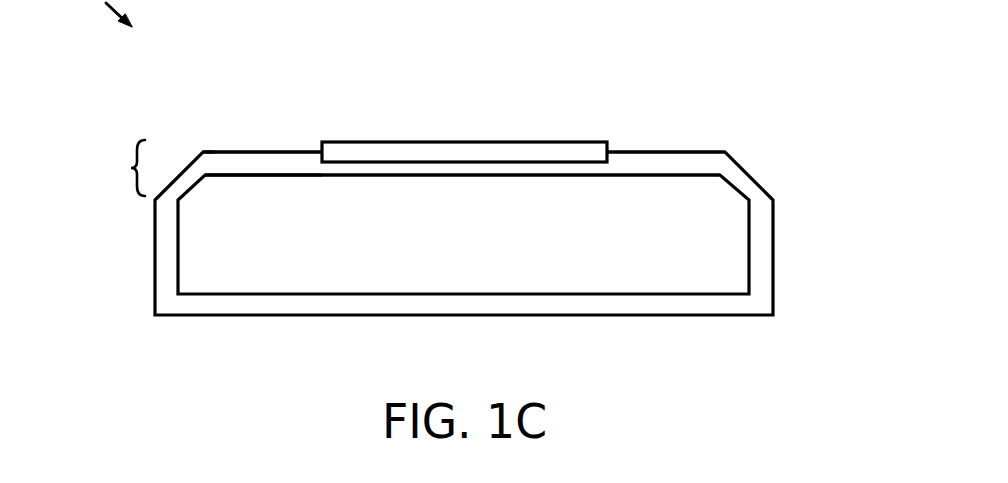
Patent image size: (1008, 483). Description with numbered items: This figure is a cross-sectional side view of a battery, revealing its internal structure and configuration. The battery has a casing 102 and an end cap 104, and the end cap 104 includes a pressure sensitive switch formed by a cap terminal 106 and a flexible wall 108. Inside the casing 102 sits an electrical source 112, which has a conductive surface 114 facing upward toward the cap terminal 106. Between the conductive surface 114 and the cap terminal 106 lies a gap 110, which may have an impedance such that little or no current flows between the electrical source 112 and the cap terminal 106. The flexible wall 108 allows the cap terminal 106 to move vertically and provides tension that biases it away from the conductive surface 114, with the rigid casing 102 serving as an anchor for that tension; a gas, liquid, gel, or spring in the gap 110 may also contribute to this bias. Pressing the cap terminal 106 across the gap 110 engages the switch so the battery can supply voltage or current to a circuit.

The casing 102 is at (763, 277).
The end cap 104 is at (151, 168).
The cap terminal 106 is at (445, 148).
The flexible wall 108 is at (645, 153).
The gap 110 is at (692, 172).
The electrical source 112 is at (192, 268).
The conductive surface 114 is at (308, 176).